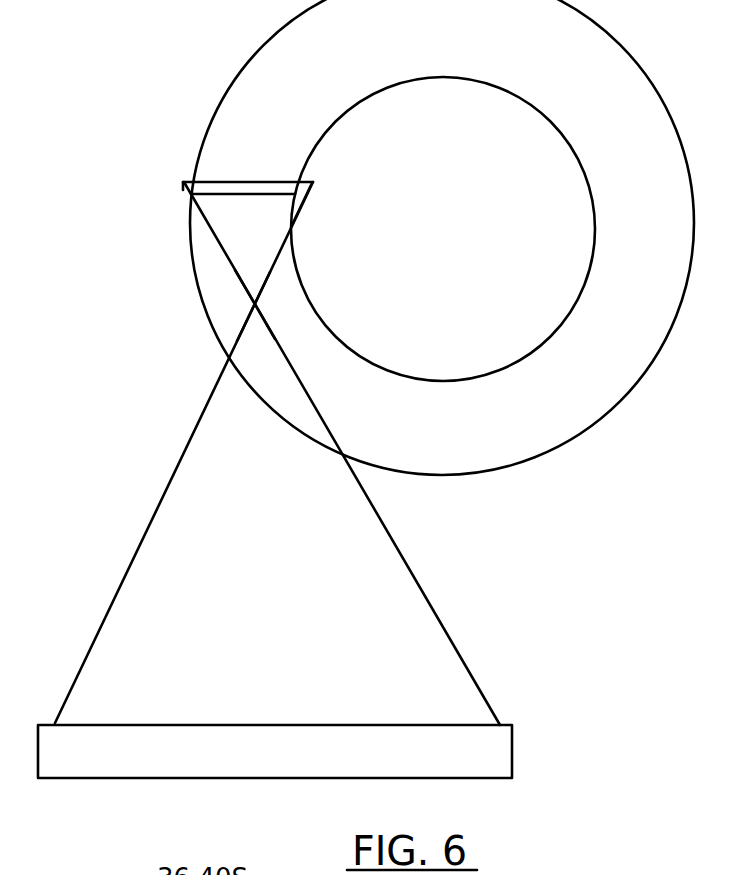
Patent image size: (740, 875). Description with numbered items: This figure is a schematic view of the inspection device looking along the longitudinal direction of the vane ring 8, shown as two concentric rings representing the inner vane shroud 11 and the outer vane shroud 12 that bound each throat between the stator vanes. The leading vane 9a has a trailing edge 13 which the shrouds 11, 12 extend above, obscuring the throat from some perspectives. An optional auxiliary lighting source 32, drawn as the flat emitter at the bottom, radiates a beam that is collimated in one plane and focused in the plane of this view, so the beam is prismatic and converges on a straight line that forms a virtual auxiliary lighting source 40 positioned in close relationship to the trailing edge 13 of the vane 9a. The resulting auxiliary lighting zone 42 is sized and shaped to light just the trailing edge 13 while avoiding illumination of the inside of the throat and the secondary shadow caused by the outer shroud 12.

The vane ring 8 is at (442, 277).
The inner vane shroud 11 is at (547, 341).
The outer vane shroud 12 is at (502, 467).
The trailing edge 13 is at (294, 224).
The stator vane 9a is at (212, 224).
The virtual auxiliary lighting source 40 is at (258, 300).
The auxiliary lighting zone 42 is at (250, 248).
The auxiliary lighting source 32 is at (512, 753).